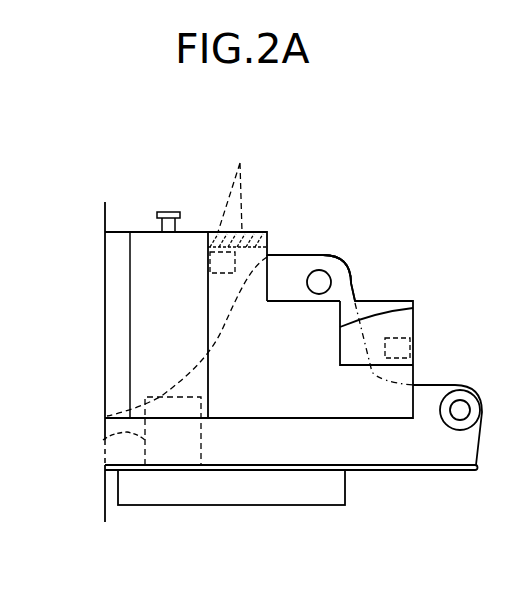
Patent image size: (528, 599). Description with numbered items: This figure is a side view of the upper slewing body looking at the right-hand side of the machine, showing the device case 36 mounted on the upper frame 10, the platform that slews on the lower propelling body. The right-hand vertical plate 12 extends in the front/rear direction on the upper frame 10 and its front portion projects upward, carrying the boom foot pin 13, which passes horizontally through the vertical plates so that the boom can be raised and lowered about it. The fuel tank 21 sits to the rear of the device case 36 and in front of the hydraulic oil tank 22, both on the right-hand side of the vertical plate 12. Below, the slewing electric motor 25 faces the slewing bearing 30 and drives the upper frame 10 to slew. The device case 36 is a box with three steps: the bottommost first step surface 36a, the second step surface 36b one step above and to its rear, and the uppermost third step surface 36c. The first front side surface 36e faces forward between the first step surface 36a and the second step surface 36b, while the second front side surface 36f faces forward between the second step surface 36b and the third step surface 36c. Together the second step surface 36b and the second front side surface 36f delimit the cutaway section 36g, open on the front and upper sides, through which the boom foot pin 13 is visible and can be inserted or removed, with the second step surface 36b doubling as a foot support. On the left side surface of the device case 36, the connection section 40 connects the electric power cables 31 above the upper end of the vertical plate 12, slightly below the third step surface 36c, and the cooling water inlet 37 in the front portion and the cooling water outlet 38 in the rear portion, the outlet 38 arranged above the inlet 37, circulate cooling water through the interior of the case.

The upper frame 10 is at (460, 471).
The right-hand vertical plate 12 is at (327, 256).
The boom foot pin 13 is at (331, 283).
The fuel tank 21 is at (192, 231).
The hydraulic oil tank 22 is at (120, 231).
The slewing electric motor 25 is at (103, 440).
The slewing bearing 30 is at (243, 506).
The electric power cables 31 is at (199, 301).
The connection section 40 is at (187, 314).
The device case 36 is at (386, 419).
The first step surface 36a is at (362, 367).
The second step surface 36b is at (300, 302).
The third step surface 36c is at (255, 232).
The first front side surface 36e is at (413, 308).
The second front side surface 36f is at (268, 280).
The cutaway section 36g is at (297, 248).
The cooling water inlet 37 is at (410, 345).
The cooling water outlet 38 is at (208, 262).